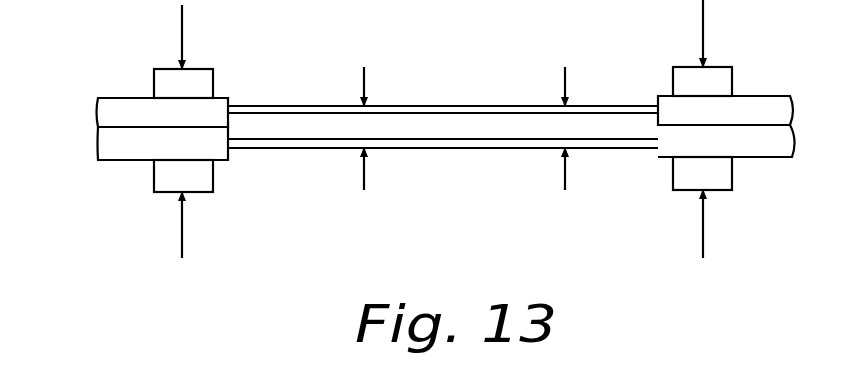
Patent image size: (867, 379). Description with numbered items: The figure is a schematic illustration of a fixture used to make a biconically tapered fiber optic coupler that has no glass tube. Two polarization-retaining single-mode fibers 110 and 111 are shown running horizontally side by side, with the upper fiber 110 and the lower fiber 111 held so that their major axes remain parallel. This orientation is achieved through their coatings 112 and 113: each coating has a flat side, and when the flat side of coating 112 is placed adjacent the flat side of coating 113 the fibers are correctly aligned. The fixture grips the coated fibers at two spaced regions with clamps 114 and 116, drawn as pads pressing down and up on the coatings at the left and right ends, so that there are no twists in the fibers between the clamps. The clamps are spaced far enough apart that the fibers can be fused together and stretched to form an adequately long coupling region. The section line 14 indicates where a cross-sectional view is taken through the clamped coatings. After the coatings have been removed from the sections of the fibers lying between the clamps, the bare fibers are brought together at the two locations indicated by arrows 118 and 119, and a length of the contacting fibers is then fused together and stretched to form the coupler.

The section line 14- 14 is at (240, 36).
The PRSM fiber 110 is at (486, 104).
The PRSM fiber 111 is at (480, 150).
The coating 112 is at (119, 97).
The coating 113 is at (112, 161).
The clamp 114 is at (168, 68).
The clamp 116 is at (687, 66).
The arrow 118 is at (365, 82).
The arrow 119 is at (566, 80).